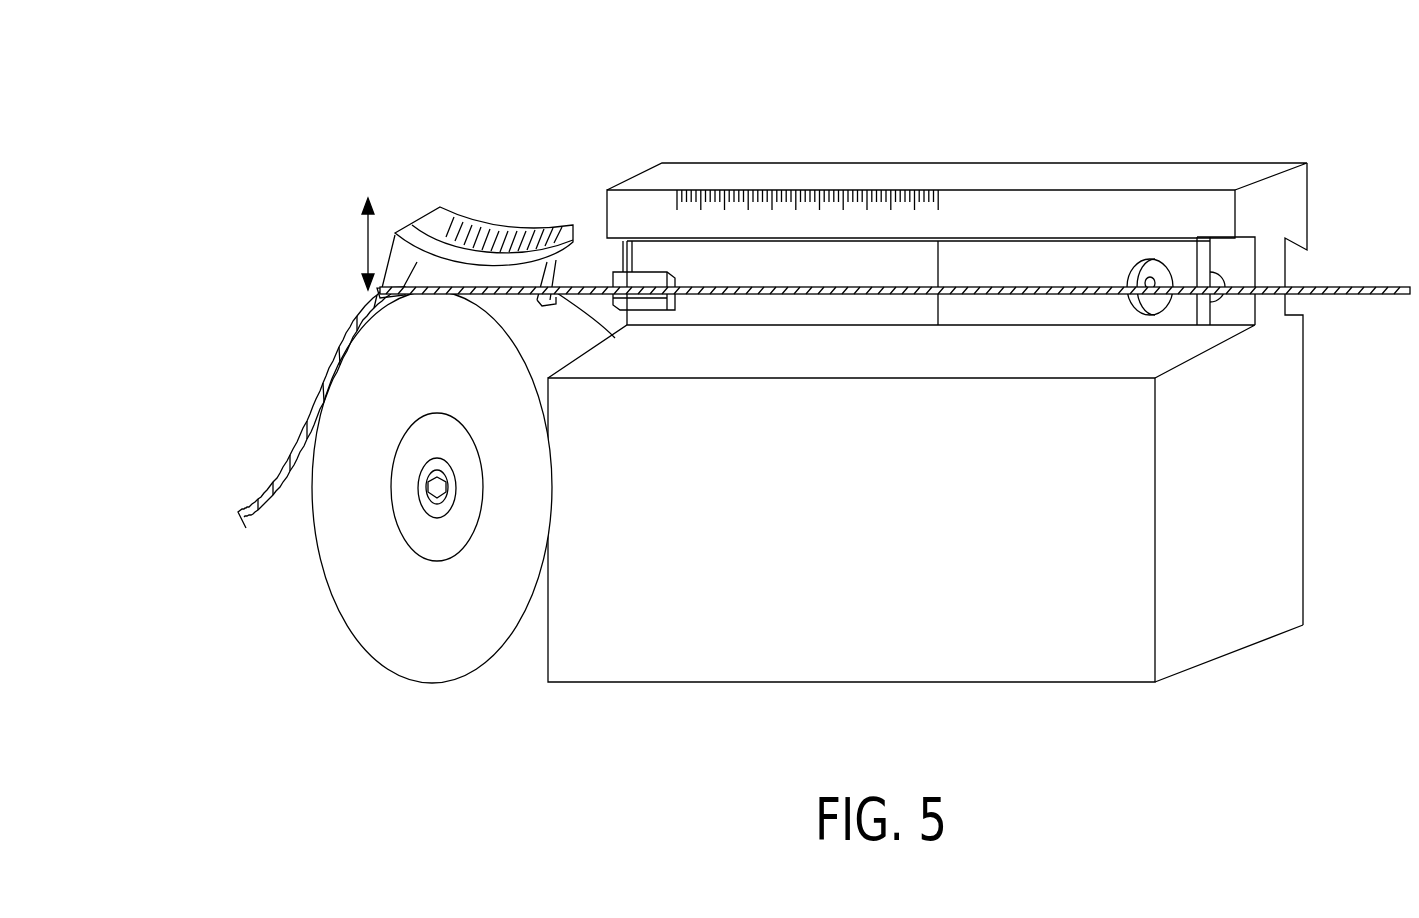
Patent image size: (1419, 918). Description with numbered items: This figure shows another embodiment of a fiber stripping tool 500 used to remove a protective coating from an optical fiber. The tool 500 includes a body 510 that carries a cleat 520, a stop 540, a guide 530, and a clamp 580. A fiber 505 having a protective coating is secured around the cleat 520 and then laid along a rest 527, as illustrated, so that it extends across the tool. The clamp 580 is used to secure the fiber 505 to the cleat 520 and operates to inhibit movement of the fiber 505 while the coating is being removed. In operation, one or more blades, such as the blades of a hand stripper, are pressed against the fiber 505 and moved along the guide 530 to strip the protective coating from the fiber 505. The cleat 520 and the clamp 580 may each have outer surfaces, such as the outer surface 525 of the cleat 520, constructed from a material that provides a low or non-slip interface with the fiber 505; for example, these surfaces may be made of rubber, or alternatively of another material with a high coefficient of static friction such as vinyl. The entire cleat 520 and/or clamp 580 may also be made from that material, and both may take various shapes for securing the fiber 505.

The fiber stripping tool 500 is at (262, 132).
The fiber 505 is at (298, 433).
The body 510 is at (712, 648).
The cleat 520 is at (415, 660).
The outer surface 525 is at (577, 327).
The rest 527 is at (638, 277).
The guide 530 is at (905, 270).
The stop 540 is at (1073, 265).
The clamp 580 is at (433, 277).